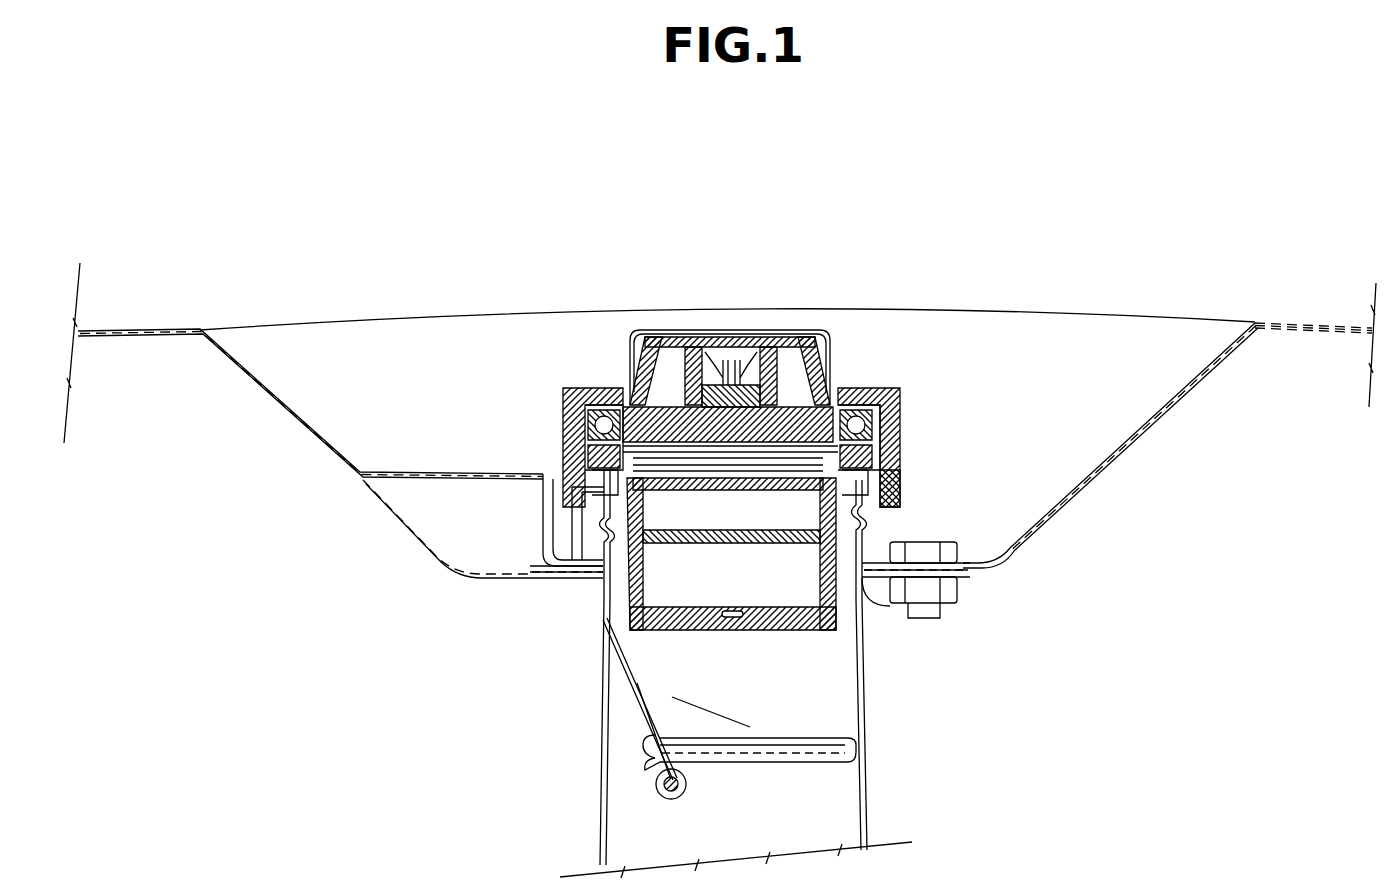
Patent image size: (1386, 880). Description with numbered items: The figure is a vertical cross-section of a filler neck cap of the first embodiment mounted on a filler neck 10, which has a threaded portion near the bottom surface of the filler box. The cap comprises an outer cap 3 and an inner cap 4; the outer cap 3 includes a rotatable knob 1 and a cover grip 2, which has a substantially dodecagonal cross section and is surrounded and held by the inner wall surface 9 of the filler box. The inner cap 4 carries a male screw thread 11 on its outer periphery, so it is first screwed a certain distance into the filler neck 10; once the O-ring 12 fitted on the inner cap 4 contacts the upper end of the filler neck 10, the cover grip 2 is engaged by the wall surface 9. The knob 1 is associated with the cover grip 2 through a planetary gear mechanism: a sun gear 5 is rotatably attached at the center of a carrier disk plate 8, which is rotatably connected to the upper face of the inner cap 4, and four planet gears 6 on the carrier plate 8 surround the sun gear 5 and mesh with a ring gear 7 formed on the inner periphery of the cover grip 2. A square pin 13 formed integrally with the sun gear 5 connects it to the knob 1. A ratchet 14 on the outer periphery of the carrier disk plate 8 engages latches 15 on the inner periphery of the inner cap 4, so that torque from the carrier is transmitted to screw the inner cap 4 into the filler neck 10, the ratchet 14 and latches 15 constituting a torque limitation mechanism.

The rotatable knob 1 is at (802, 338).
The cover grip 2 is at (565, 388).
The outer cap 3 is at (852, 338).
The inner cap 4 is at (600, 578).
The sun gear 5 is at (752, 378).
The planet gears 6 is at (600, 388).
The ring gear 7 is at (565, 412).
The carrier disk plate 8 is at (895, 410).
The inner wall surface of filler box 9 is at (553, 500).
The filler neck 10 is at (540, 572).
The male screw thread 11 is at (862, 578).
The O-ring 12 is at (560, 462).
The square pin 13 is at (700, 355).
The ratchet 14 is at (897, 480).
The latches 15 is at (895, 428).